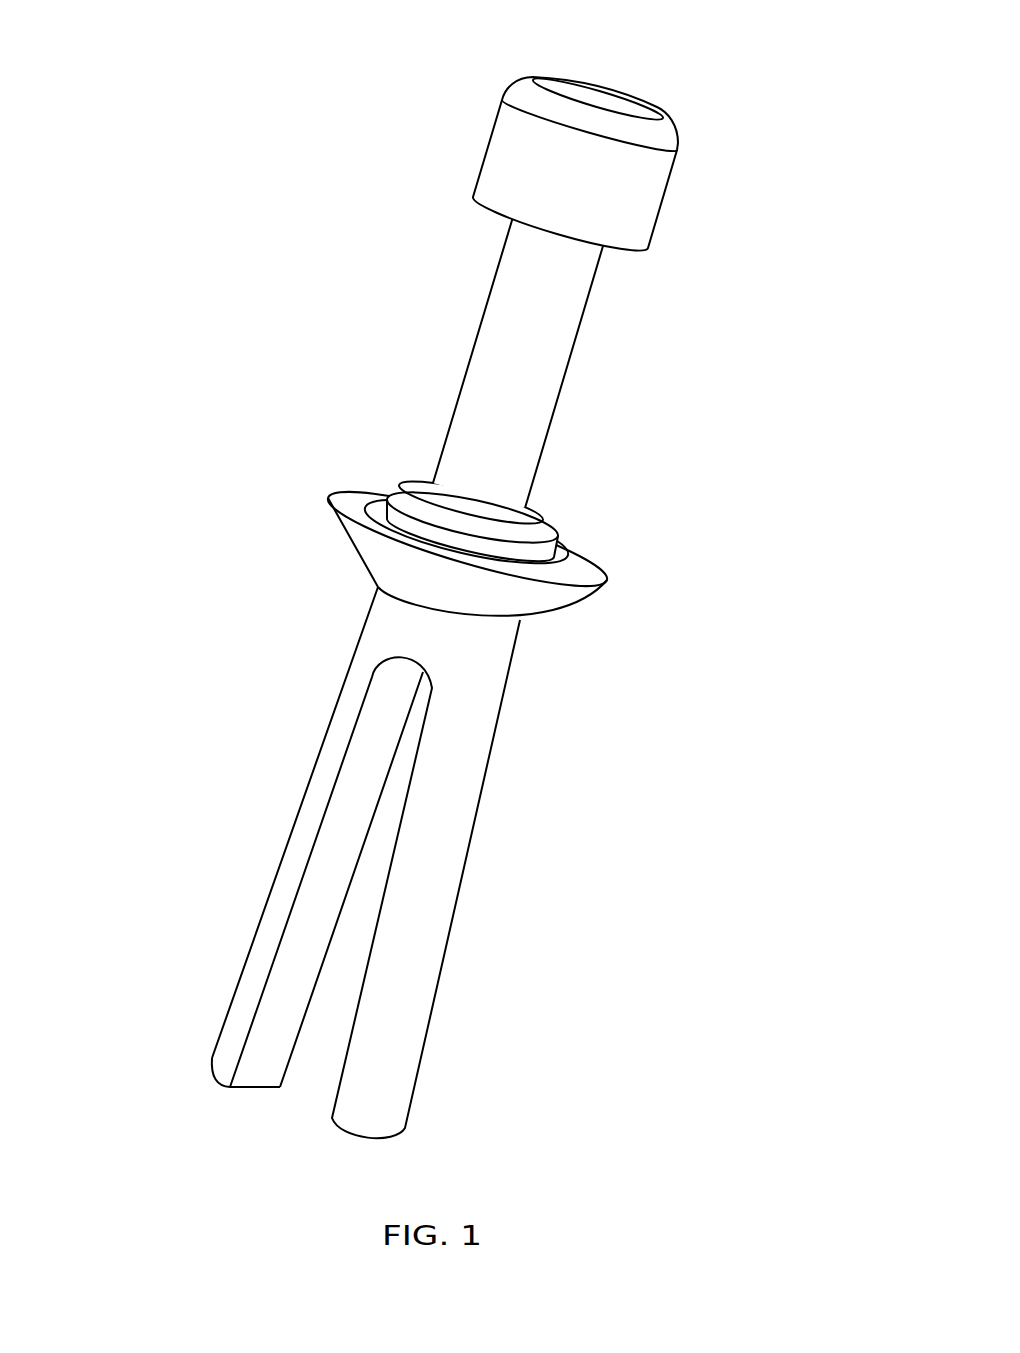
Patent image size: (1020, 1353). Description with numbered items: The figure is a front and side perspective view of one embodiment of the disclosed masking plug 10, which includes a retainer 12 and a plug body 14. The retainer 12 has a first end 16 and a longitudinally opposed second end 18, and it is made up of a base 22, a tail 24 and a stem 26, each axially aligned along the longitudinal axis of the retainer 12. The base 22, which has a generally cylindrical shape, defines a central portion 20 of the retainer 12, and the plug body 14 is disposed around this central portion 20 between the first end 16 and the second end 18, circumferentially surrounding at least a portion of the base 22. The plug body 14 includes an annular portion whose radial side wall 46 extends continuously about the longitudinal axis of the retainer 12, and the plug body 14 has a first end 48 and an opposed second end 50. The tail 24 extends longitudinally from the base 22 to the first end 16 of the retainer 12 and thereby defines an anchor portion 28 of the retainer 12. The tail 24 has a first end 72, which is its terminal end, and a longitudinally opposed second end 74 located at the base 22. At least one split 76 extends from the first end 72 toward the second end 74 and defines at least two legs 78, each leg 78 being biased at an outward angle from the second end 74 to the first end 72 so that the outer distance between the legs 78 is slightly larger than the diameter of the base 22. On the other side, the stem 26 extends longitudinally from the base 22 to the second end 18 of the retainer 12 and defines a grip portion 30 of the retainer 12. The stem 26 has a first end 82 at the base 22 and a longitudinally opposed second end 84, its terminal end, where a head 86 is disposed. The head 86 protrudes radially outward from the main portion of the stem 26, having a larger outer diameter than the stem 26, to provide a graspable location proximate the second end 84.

The masking plug 10 is at (467, 618).
The retainer 12 is at (545, 522).
The plug body 14 is at (606, 579).
The first end 16 is at (334, 903).
The second end 18 is at (582, 134).
The central portion 20 is at (385, 532).
The base 22 is at (398, 485).
The tail 24 is at (487, 779).
The stem 26 is at (574, 356).
The anchor portion 28 is at (415, 879).
The grip portion 30 is at (488, 362).
The radial side wall 46 is at (540, 607).
The first end 48 is at (408, 542).
The second end 50 is at (429, 542).
The first end 72 is at (149, 1082).
The second end 74 is at (295, 584).
The split 76 is at (312, 1073).
The legs 78 is at (248, 946).
The first end 82 is at (444, 449).
The second end 84 is at (526, 72).
The head 86 is at (668, 189).